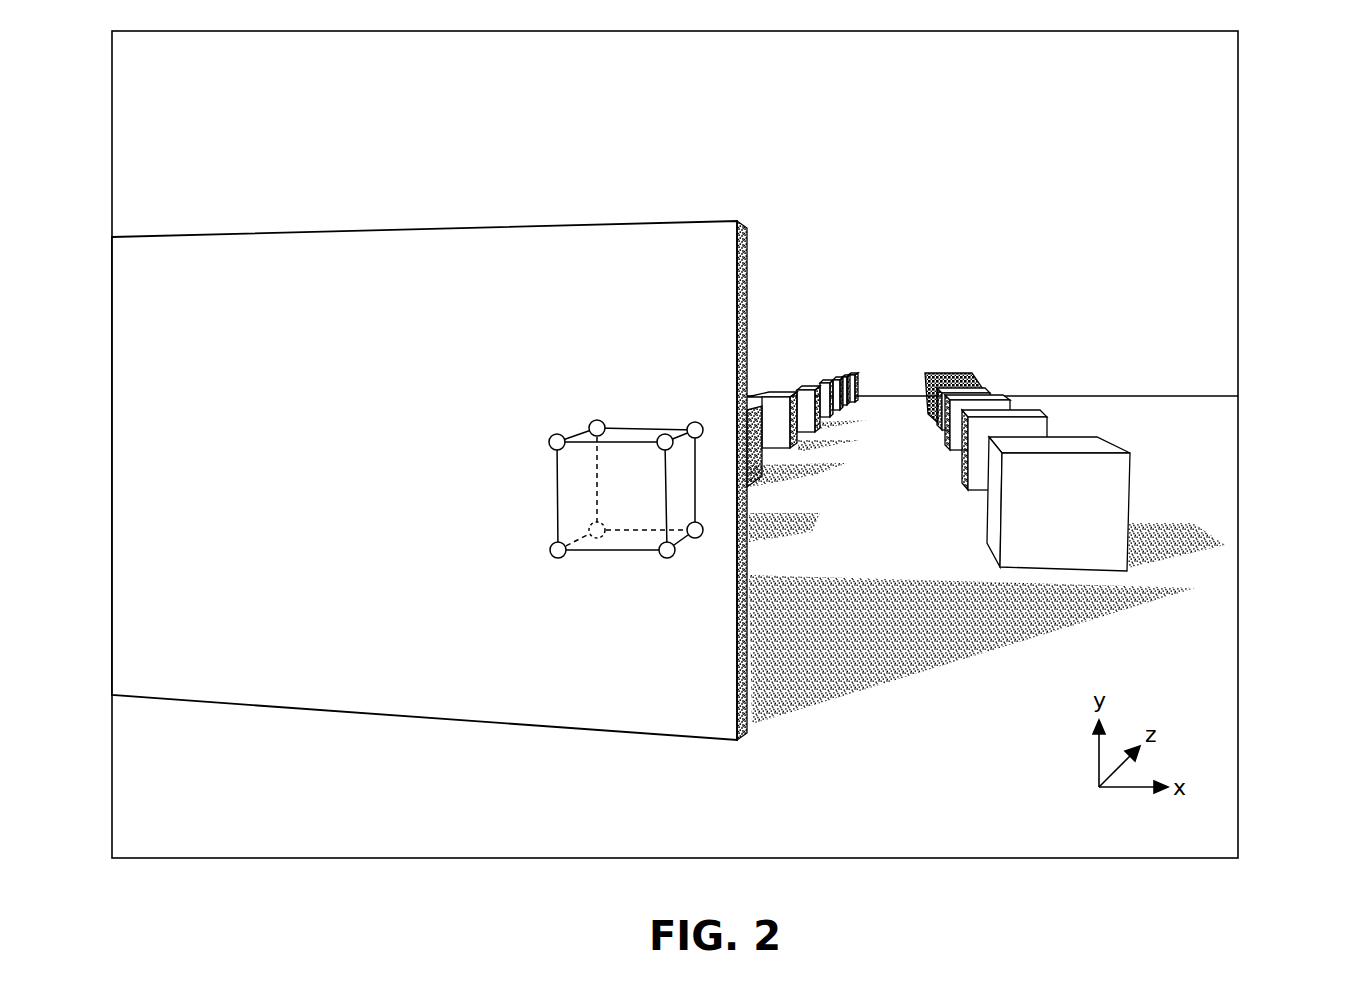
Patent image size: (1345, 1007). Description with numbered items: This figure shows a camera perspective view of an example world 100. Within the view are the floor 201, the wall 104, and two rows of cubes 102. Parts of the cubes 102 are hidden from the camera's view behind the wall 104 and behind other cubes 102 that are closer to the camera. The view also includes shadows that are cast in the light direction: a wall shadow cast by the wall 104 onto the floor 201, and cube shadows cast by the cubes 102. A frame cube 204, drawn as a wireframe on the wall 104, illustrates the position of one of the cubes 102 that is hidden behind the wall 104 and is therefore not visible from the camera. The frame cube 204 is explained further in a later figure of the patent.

The world 100 is at (979, 156).
The wall 104 is at (500, 226).
The frame cube 204 is at (597, 558).
The floor 201 is at (610, 812).
The cubes 102 is at (1097, 437).